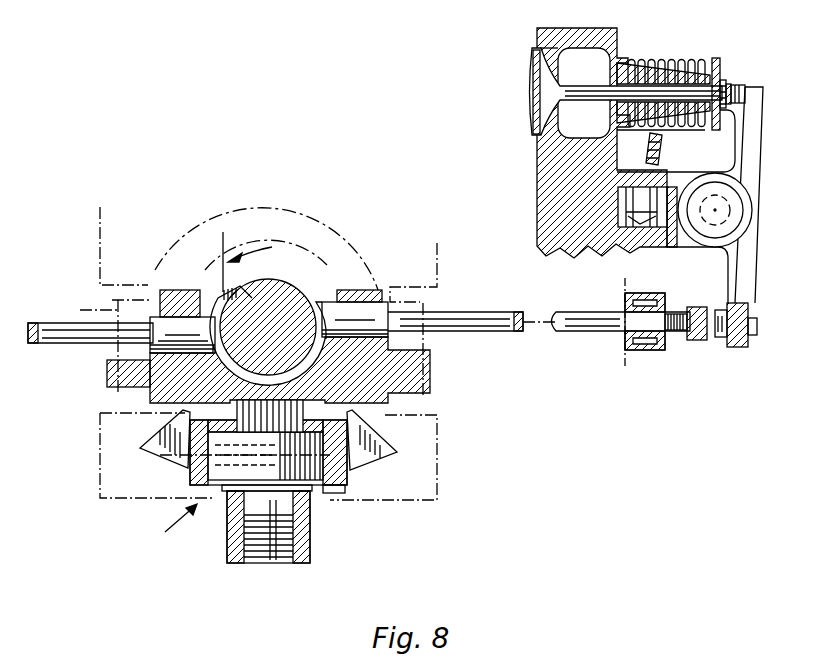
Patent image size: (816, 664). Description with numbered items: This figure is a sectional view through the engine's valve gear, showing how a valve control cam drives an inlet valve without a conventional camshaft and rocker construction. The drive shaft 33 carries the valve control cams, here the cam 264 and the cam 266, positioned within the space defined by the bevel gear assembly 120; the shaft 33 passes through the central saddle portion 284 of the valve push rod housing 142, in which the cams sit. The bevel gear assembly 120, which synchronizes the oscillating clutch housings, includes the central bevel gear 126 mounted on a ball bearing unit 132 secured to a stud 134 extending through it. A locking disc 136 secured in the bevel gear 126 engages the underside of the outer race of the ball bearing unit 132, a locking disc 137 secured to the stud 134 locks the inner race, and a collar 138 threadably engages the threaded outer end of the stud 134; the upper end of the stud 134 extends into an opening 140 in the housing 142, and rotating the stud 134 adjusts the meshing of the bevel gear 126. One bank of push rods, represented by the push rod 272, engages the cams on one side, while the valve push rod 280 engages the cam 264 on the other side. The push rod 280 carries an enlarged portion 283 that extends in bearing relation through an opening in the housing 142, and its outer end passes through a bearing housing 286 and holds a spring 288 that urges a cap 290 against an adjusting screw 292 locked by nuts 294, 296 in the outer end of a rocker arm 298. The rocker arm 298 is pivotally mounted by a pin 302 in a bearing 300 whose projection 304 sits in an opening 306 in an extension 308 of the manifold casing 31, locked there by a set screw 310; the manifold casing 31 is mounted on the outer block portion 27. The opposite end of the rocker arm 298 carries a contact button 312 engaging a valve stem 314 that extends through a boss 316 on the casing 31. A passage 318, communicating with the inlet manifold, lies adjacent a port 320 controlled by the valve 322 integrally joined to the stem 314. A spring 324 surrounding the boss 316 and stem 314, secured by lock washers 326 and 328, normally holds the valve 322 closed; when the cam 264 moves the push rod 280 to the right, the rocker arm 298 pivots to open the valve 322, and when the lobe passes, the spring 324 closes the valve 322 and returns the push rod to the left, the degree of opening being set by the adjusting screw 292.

The outer block portion 27 is at (266, 255).
The manifold casing 31 is at (550, 232).
The shaft 33 is at (288, 298).
The bevel gear assembly 120 is at (163, 480).
The central bevel gear 126 is at (354, 232).
The ball bearing unit 132 is at (215, 460).
The stud 134 is at (265, 555).
The locking disc 136 is at (328, 494).
The locking disc 137 is at (228, 491).
The collar 138 is at (236, 526).
The opening 140 is at (240, 410).
The valve push rod housing 142 is at (430, 378).
The valve control cam 264 is at (223, 252).
The valve control cam 266 is at (240, 378).
The push rod 272 is at (52, 340).
The valve push rod 280 is at (484, 312).
The enlarged portion 283 is at (355, 318).
The central saddle portion 284 is at (182, 327).
The bearing housing 286 is at (625, 340).
The spring 288 is at (675, 336).
The cap 290 is at (697, 343).
The adjusting screw 292 is at (760, 328).
The nut 294 is at (718, 340).
The nut 296 is at (745, 348).
The rocker arm 298 is at (735, 278).
The bearing 300 is at (692, 176).
The pin 302 is at (722, 212).
The projection 304 is at (630, 232).
The opening 306 is at (600, 247).
The extension 308 is at (667, 240).
The set screw 310 is at (657, 165).
The contact button 312 is at (743, 92).
The valve stem 314 is at (636, 88).
The boss 316 is at (668, 60).
The passage 318 is at (578, 65).
The port 320 is at (549, 42).
The valve 322 is at (532, 78).
The spring 324 is at (714, 64).
The lock washer 326 is at (722, 82).
The lock washer 328 is at (729, 86).